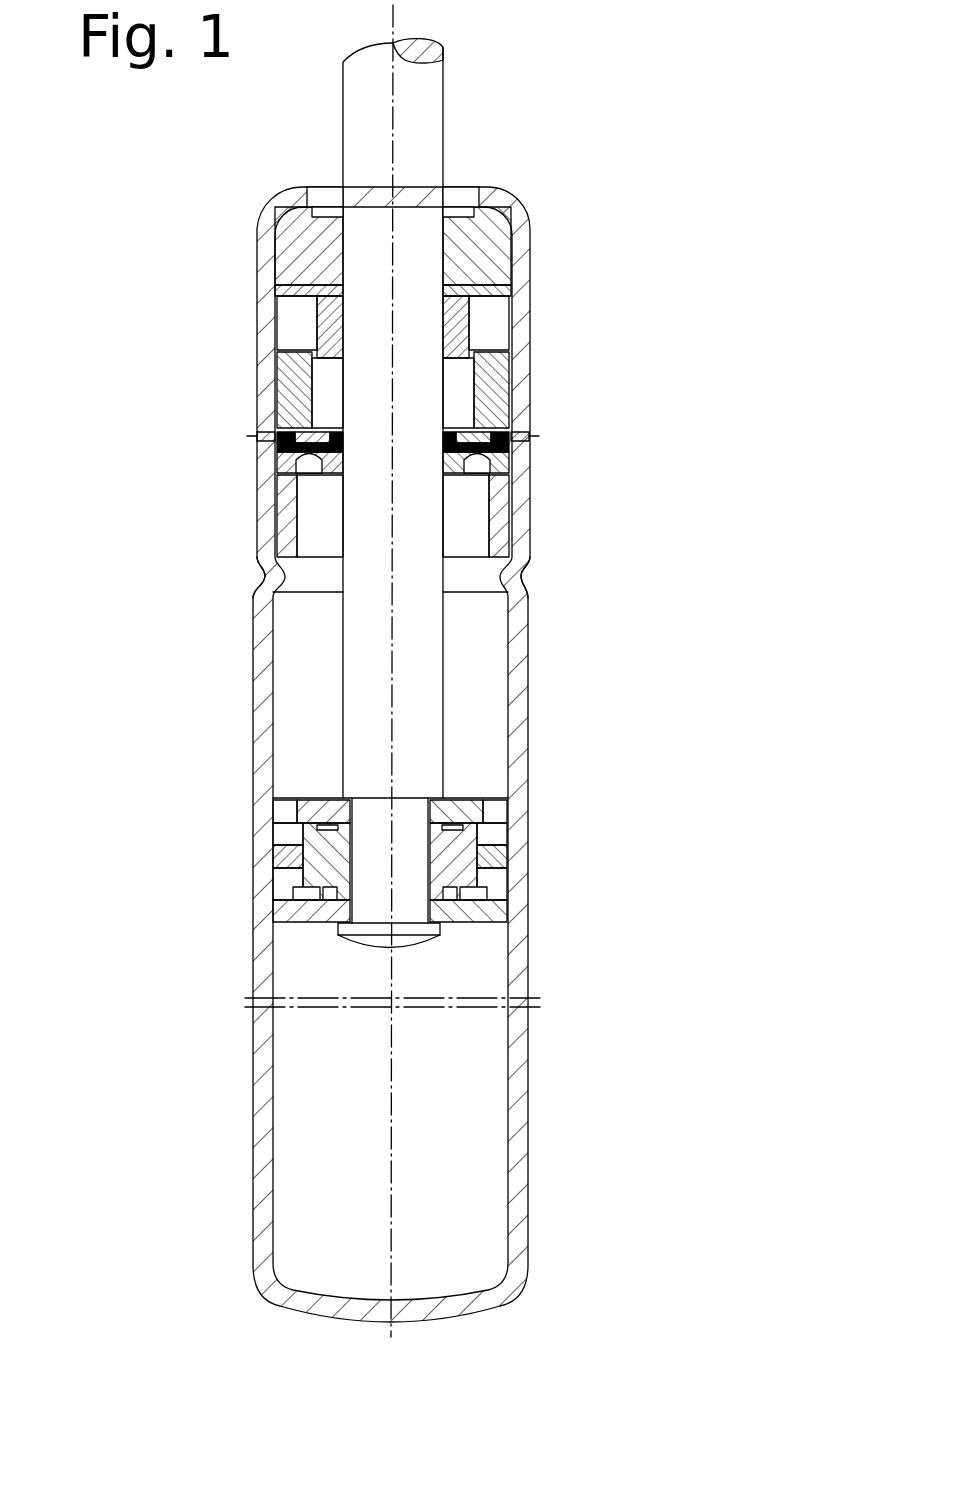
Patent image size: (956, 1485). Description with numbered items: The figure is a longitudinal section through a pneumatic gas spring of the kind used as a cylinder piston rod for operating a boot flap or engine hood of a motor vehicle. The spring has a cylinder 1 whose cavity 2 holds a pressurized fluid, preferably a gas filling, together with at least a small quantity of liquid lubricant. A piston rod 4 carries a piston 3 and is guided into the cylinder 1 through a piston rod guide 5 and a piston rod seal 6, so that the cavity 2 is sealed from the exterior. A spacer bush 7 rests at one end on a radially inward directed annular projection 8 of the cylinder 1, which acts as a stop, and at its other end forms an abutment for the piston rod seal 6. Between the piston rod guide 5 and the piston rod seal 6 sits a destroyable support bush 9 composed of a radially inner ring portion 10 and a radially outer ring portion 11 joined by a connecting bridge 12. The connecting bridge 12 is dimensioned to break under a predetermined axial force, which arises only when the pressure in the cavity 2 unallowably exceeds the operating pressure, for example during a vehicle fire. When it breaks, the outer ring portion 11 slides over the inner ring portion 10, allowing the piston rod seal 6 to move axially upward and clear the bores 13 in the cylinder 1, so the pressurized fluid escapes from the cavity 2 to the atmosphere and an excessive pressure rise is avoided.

The cylinder 1 is at (518, 720).
The cavity 2 is at (477, 634).
The piston 3 is at (457, 877).
The piston rod 4 is at (426, 117).
The piston rod guide 5 is at (488, 242).
The piston rod seal 6 is at (500, 462).
The spacer bush 7 is at (493, 520).
The annular projection 8 is at (257, 580).
The support bush 9 is at (497, 302).
The inner ring portion 10 is at (330, 316).
The outer ring portion 11 is at (293, 404).
The connecting bridge 12 is at (275, 362).
The bores 13 is at (257, 445).